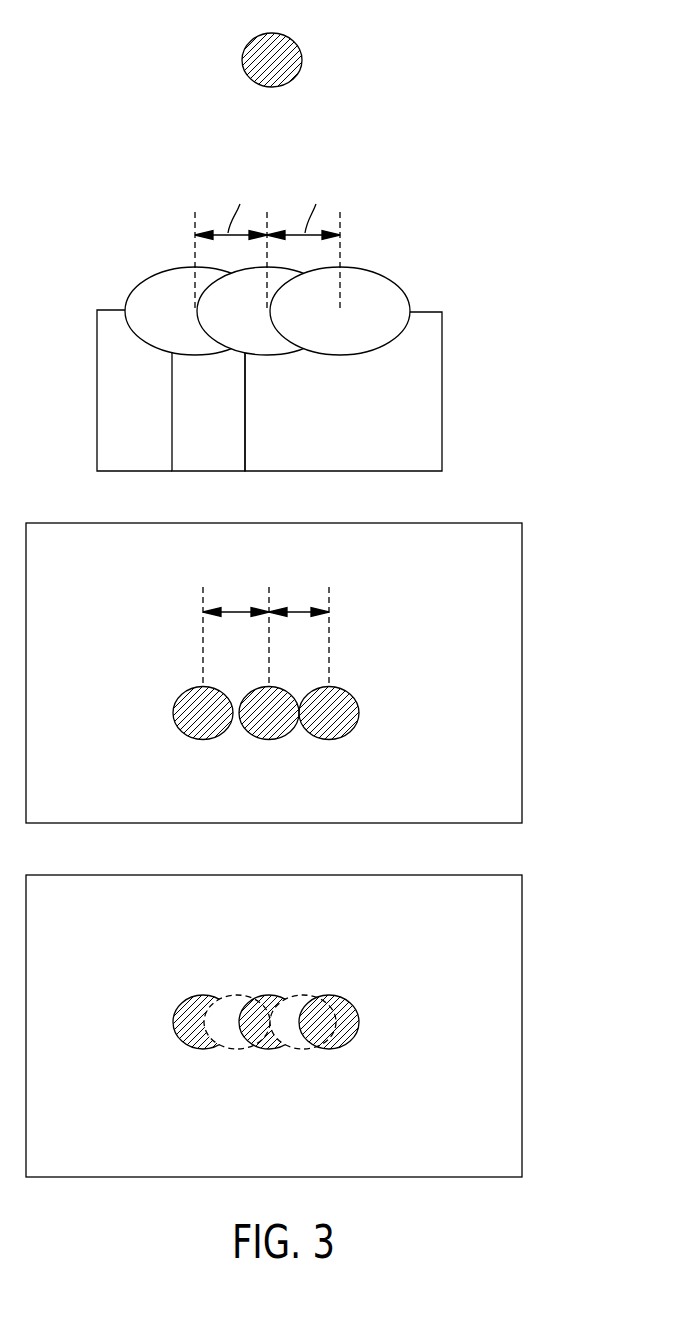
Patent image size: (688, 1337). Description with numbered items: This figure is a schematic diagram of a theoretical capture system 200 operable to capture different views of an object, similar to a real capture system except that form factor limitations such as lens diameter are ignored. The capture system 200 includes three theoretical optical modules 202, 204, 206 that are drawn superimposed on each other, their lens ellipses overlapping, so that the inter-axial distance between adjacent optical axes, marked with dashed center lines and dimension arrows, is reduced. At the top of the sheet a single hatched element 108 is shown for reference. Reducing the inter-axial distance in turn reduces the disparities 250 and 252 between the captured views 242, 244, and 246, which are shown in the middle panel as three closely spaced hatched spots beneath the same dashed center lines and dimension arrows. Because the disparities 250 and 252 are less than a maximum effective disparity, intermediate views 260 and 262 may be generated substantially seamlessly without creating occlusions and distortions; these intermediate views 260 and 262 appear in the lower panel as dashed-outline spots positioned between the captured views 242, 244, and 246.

The laser beam spot 108 is at (300, 55).
The theoretical capture system 200 is at (318, 344).
The theoretical optical module 202 is at (337, 448).
The theoretical optical module 204 is at (205, 452).
The theoretical optical module 206 is at (127, 450).
The captured view 242 is at (335, 740).
The captured view 244 is at (272, 740).
The captured view 246 is at (208, 740).
The disparity 250 is at (302, 610).
The disparity 252 is at (237, 610).
The intermediate view 260 is at (302, 1050).
The intermediate view 262 is at (238, 1050).